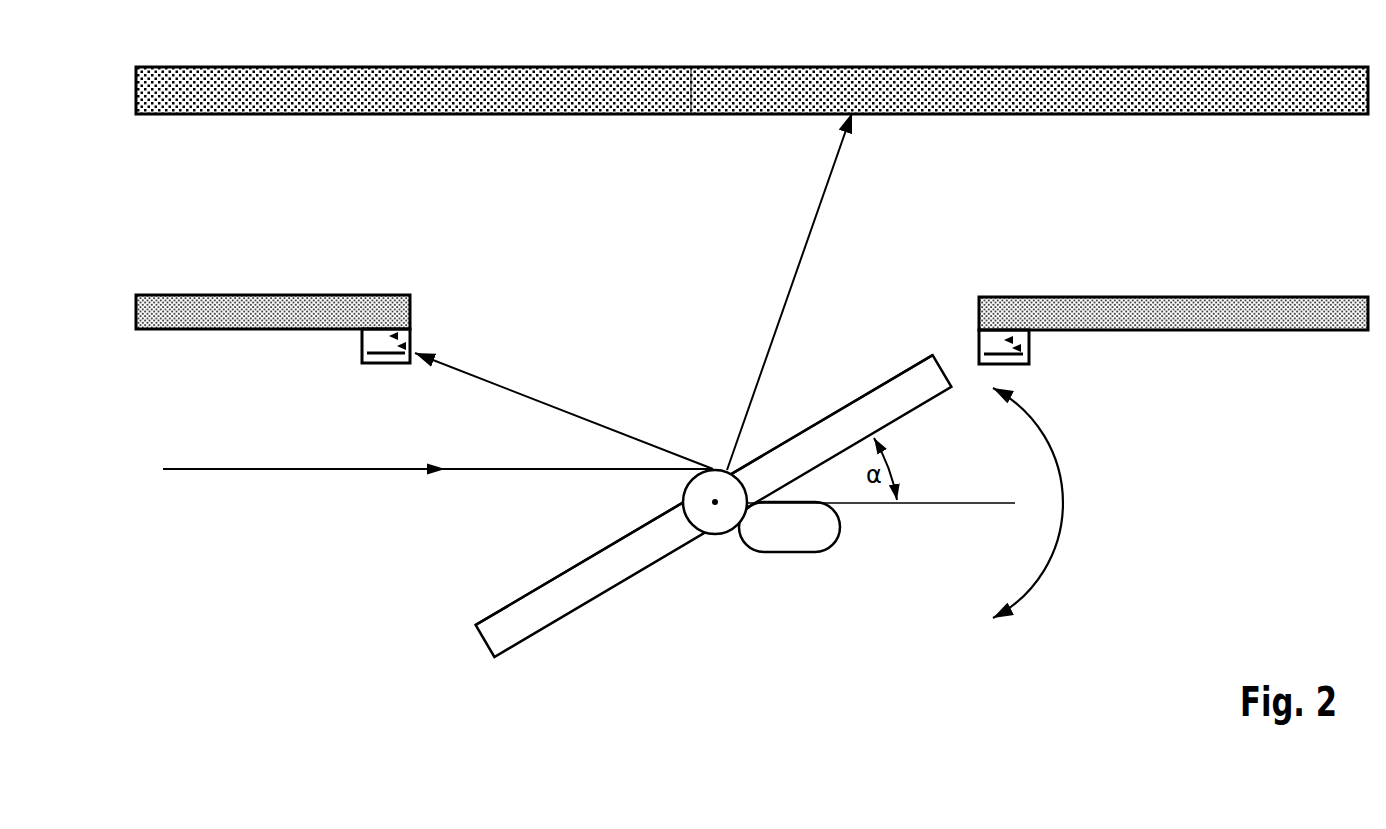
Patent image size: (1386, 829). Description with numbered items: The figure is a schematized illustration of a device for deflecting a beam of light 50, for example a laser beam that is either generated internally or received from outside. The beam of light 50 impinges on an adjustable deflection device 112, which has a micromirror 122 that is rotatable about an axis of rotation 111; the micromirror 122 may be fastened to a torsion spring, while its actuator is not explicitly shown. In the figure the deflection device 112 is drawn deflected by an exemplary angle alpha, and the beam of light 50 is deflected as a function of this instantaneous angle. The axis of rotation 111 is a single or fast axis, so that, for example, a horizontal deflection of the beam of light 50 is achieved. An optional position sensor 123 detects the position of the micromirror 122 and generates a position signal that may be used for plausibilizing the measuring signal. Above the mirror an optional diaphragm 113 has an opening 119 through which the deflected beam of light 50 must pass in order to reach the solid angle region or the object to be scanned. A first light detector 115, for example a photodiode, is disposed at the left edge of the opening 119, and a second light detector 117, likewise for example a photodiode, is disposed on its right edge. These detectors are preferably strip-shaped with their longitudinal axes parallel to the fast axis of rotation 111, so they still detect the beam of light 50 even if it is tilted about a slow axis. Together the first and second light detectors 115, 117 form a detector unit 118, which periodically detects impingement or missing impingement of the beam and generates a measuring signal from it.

The beam of light 50 is at (337, 472).
The axis of rotation 111 is at (715, 505).
The adjustable deflection device 112 is at (553, 602).
The diaphragm 113 is at (247, 295).
The first light detector 115 is at (1283, 115).
The second light detector 117 is at (1030, 353).
The detector unit 118 is at (363, 350).
The opening 119 is at (959, 304).
The micromirror 122 is at (660, 545).
The position sensor 123 is at (803, 538).